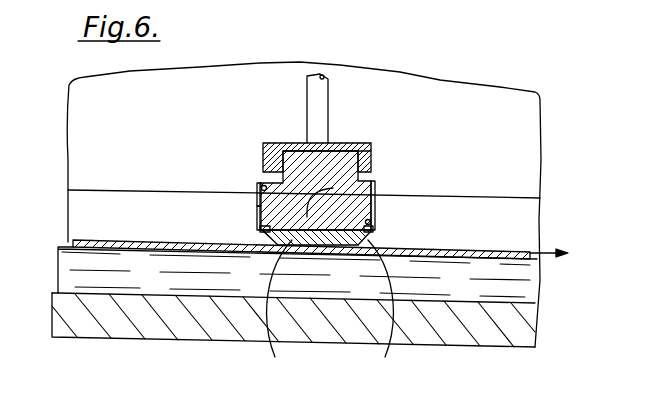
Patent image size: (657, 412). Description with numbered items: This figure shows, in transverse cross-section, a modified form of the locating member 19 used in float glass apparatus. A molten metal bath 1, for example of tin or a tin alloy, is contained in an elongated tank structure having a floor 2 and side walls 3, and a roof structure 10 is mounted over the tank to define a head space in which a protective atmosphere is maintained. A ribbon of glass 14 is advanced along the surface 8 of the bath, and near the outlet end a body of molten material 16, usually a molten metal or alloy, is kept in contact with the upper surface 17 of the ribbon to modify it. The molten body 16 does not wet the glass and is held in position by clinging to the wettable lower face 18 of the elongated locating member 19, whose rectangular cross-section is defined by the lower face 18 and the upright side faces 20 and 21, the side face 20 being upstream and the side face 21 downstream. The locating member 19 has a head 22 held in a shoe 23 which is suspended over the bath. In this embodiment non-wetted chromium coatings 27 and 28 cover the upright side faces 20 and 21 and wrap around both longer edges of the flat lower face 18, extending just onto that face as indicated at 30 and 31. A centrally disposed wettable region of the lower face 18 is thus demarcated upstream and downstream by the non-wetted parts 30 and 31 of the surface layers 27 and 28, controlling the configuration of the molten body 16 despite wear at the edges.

The molten metal bath 1 is at (527, 298).
The floor 2 is at (158, 326).
The side walls 3 is at (530, 210).
The surface of the molten metal bath 8 is at (523, 260).
The roof structure 10 is at (528, 138).
The ribbon of glass 14 is at (93, 242).
The body of molten material 16 is at (279, 310).
The upper surface of the ribbon 17 is at (508, 251).
The lower face 18 is at (262, 228).
The locating member 19 is at (350, 182).
The upstream upright side face 20 is at (262, 183).
The downstream upright side face 21 is at (372, 230).
The head 22 is at (270, 143).
The shoe 23 is at (368, 148).
The chromium coating 27 is at (258, 200).
The chromium coating 28 is at (373, 210).
The non-wetted part of the surface layer 30 is at (262, 241).
The non-wetted part of the surface layer 31 is at (379, 315).